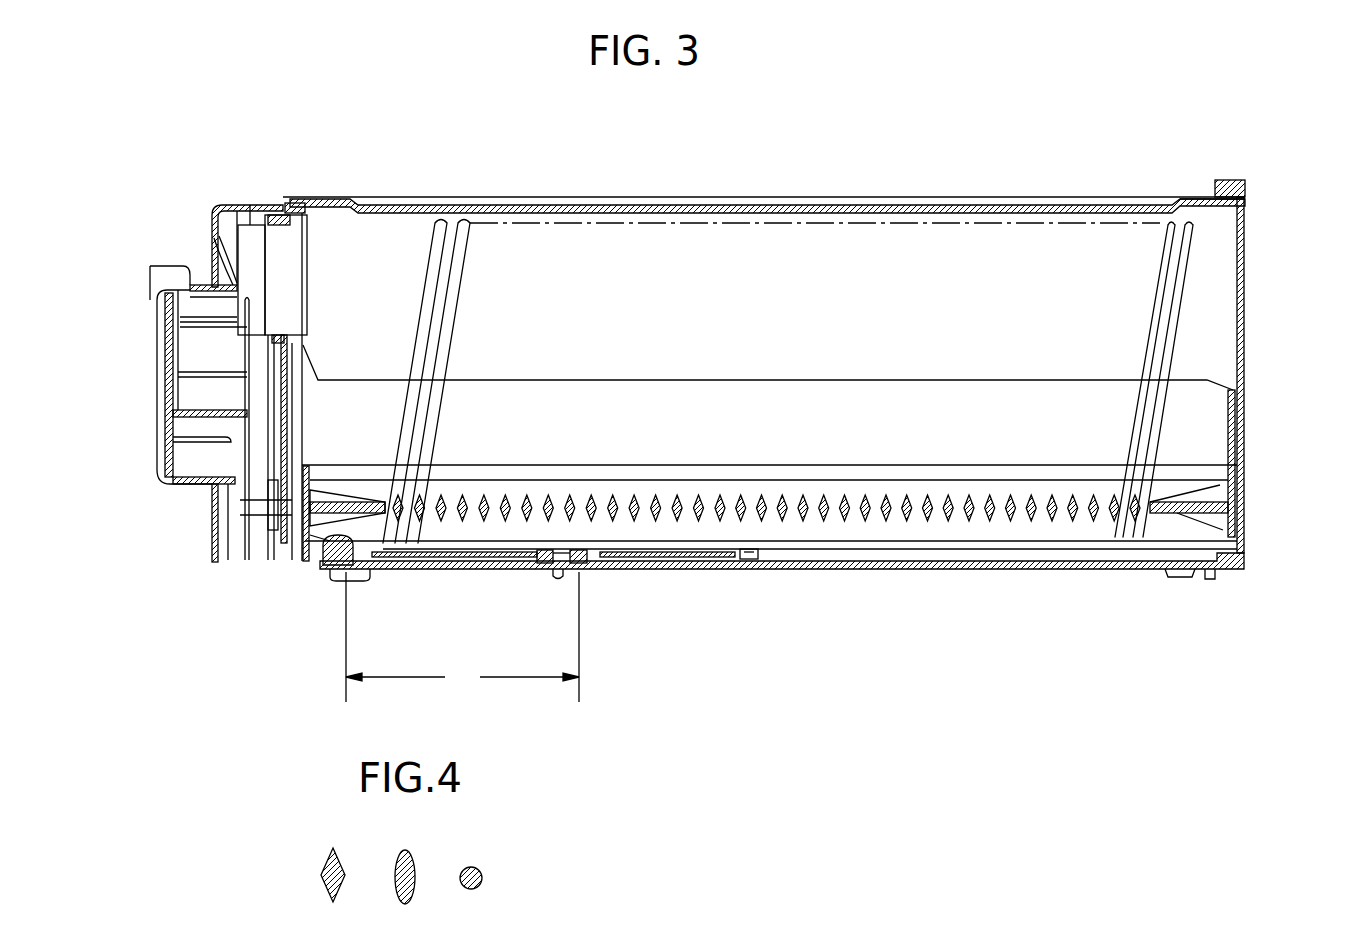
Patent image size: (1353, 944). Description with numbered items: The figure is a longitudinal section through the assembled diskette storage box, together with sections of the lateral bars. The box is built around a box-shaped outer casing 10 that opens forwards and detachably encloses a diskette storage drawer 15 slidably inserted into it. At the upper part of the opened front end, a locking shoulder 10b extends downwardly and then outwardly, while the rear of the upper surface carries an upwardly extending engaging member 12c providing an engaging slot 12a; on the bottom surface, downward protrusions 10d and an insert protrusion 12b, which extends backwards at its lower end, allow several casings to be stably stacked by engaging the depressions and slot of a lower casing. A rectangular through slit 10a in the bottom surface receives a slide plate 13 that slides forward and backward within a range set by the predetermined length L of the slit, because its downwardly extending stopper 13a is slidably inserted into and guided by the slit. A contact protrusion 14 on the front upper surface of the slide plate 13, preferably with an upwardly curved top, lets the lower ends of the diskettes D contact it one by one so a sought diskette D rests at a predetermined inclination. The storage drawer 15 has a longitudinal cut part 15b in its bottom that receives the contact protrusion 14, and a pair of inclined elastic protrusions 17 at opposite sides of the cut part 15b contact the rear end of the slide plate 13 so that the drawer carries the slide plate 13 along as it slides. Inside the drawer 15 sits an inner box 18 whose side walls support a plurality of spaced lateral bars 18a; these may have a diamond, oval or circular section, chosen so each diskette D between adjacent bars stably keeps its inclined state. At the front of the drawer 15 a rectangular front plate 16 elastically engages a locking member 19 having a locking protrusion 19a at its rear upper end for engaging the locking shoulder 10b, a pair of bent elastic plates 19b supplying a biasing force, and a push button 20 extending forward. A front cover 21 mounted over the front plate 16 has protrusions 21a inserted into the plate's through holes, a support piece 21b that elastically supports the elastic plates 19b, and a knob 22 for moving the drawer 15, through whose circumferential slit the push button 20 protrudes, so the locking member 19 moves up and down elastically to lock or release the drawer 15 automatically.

The outer casing 10 is at (1012, 570).
The rectangular through slit 10a is at (511, 570).
The locking shoulder 10b is at (283, 205).
The downward protrusions 10d is at (358, 582).
The engaging slot 12a is at (1237, 192).
The insert protrusion 12b is at (1211, 581).
The engaging member 12c is at (1228, 179).
The slide plate 13 is at (415, 570).
The stopper 13a is at (590, 568).
The contact protrusion 14 is at (318, 566).
The diskette storage drawer 15 is at (705, 366).
The longitudinal cut part 15b is at (683, 569).
The front plate 16 is at (287, 430).
The elastic protrusions 17 is at (772, 561).
The inner box 18 is at (1222, 482).
The lateral bars 18a is at (1092, 522).
The locking member 19 is at (250, 205).
The locking protrusion 19a is at (310, 200).
The elastic plates 19b is at (183, 318).
The push button 20 is at (222, 268).
The front cover 21 is at (214, 560).
The protrusions 21a is at (282, 563).
The support piece 21b is at (270, 362).
The knob 22 is at (178, 488).
The diskette D is at (466, 258).
The predetermined length of the slit L is at (462, 637).